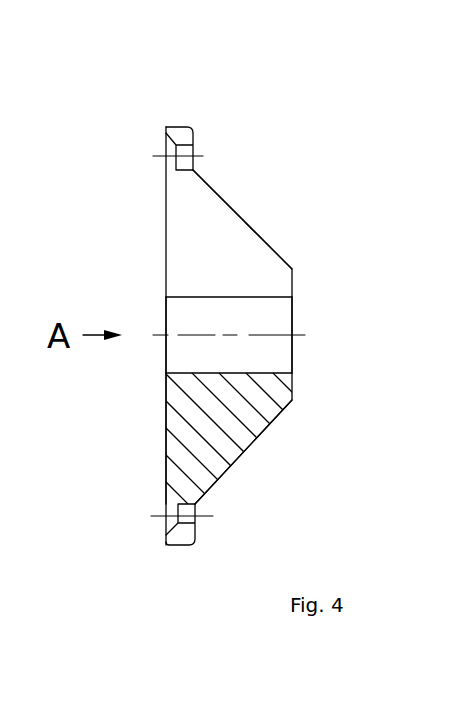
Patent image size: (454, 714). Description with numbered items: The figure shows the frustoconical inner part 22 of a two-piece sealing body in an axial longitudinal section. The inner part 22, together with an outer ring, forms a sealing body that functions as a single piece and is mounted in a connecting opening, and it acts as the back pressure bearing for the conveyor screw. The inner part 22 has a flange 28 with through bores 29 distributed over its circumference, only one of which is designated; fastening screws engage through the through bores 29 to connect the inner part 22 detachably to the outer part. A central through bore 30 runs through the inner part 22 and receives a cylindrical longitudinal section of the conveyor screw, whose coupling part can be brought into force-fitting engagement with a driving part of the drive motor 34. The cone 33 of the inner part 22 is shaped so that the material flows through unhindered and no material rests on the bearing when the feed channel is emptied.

The inner part 22 is at (200, 420).
The flange 28 is at (184, 537).
The through bores 29 is at (190, 152).
The central through bore 30 is at (265, 315).
The cone 33 is at (243, 220).
The drive motor 34 is at (167, 402).